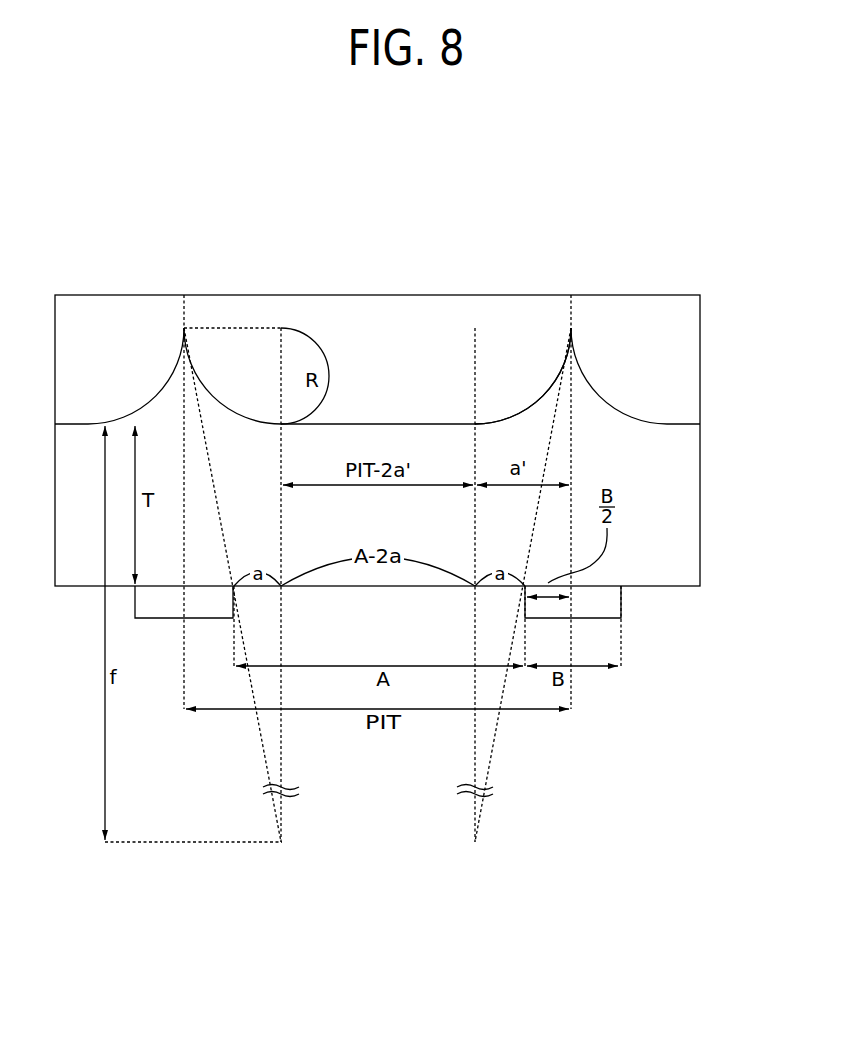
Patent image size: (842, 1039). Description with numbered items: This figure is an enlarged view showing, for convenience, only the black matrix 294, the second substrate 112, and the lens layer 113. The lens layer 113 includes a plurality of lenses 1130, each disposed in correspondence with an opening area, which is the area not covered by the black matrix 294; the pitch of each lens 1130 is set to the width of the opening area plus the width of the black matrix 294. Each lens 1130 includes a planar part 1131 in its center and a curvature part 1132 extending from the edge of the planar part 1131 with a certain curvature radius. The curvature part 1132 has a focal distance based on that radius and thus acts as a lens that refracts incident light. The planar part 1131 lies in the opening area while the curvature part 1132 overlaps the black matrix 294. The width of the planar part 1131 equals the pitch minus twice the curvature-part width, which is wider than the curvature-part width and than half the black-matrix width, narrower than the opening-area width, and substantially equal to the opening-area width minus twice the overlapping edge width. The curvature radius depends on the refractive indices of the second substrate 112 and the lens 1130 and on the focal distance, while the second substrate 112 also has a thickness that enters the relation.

The second substrate 112 is at (672, 486).
The lens layer 113 is at (628, 239).
The lens 1130 is at (116, 354).
The planar part 1131 is at (414, 423).
The curvature part 1132 is at (547, 397).
The black matrix 294 is at (600, 600).